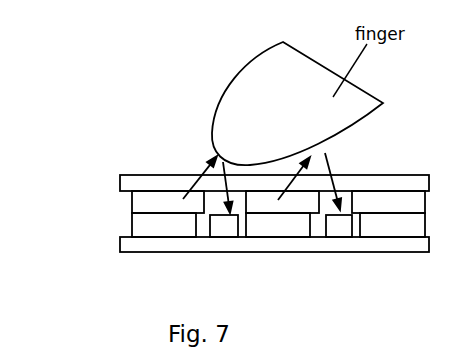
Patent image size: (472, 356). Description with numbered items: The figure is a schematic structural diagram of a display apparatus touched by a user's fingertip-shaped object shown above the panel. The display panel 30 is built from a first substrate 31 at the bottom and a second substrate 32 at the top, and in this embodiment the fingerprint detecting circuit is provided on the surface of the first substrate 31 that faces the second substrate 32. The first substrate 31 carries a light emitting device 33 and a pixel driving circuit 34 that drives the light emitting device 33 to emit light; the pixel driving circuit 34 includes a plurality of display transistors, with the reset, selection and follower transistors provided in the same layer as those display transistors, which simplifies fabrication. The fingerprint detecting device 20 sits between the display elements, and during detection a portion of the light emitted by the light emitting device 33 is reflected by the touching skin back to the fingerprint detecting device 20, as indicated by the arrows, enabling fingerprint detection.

The fingerprint detecting device 20 is at (223, 228).
The display panel 30 is at (57, 175).
The first substrate 31 is at (123, 242).
The second substrate 32 is at (123, 182).
The light emitting device 33 is at (133, 200).
The pixel driving circuit 34 is at (133, 223).